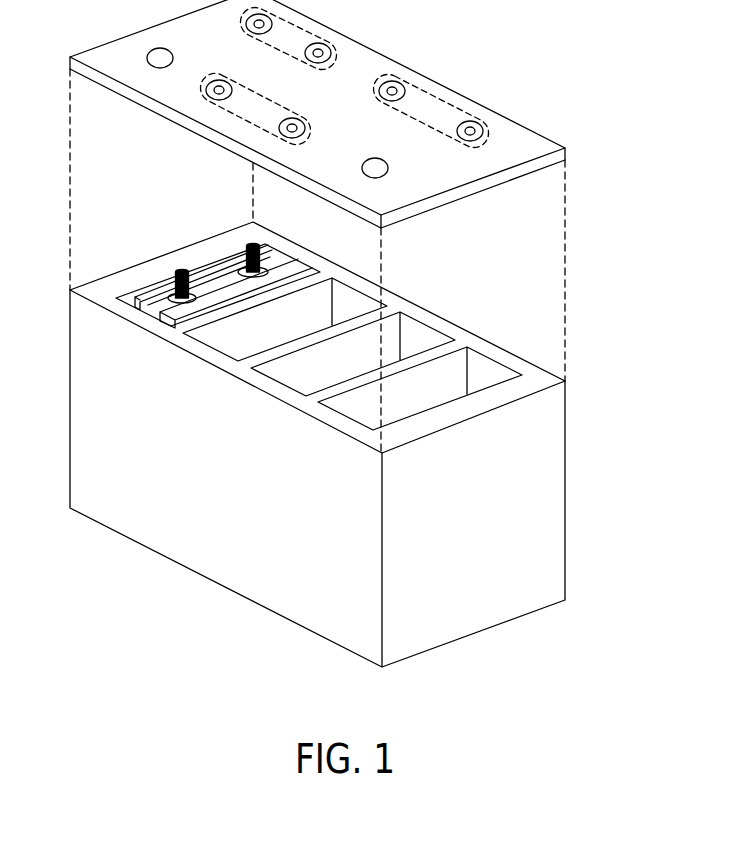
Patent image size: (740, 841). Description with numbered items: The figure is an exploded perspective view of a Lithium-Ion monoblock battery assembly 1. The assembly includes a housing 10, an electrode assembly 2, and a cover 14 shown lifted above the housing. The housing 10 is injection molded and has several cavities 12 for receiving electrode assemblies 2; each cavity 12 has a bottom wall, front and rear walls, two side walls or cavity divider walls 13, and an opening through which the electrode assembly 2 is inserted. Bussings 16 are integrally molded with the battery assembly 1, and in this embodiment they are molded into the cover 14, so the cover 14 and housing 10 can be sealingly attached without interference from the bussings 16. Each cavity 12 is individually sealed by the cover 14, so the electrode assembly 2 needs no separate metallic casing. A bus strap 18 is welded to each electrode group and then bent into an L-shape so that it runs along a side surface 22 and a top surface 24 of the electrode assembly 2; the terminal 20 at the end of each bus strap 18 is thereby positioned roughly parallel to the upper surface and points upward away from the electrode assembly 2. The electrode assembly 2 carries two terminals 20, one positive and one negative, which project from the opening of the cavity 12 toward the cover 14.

The monoblock battery assembly 1 is at (345, 333).
The electrode assembly 2 is at (210, 263).
The housing 10 is at (568, 473).
The cavity 12 is at (207, 347).
The cavity divider wall 13 is at (298, 400).
The cover 14 is at (317, 114).
The bussing 16 is at (334, 20).
The bus strap 18 is at (160, 301).
The terminal 20 is at (247, 252).
The side surface 22 is at (160, 316).
The top surface 24 is at (273, 279).